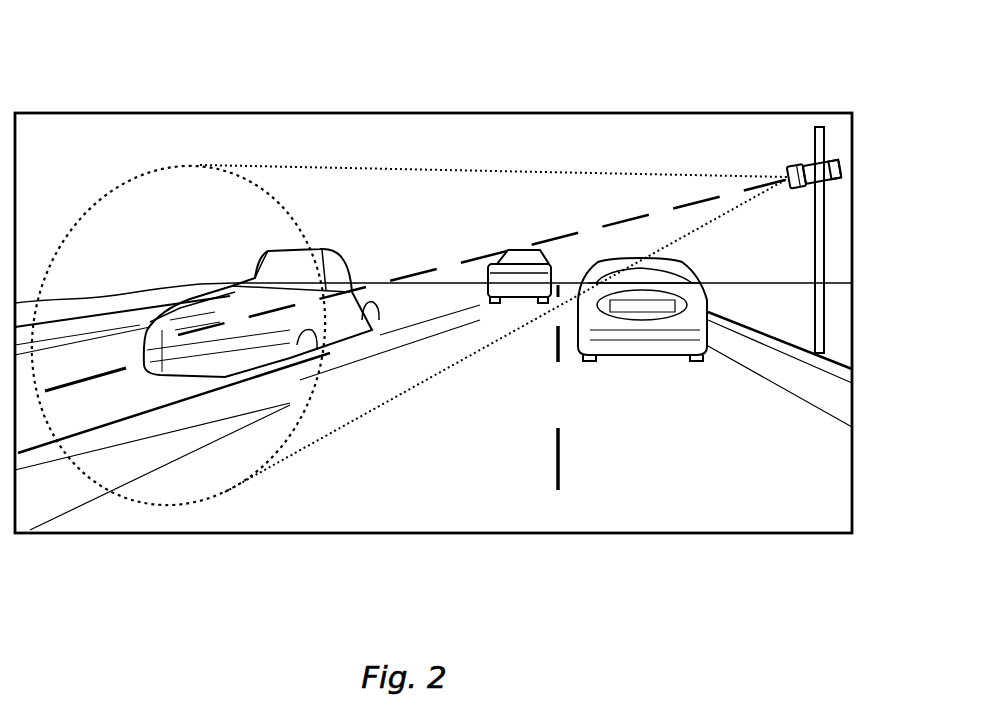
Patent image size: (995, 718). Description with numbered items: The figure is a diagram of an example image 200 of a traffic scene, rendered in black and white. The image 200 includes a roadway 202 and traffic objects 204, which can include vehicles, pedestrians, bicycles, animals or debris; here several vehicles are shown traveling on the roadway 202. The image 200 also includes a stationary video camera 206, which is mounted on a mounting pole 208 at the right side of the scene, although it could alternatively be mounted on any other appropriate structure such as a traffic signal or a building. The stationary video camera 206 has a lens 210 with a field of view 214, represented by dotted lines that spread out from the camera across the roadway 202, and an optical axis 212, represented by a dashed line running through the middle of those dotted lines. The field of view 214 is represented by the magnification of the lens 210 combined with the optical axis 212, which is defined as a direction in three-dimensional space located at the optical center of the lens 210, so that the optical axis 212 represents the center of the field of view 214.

The image 200 is at (383, 34).
The roadway 202 is at (411, 492).
The traffic objects 204 is at (622, 509).
The stationary video camera 206 is at (838, 166).
The mounting pole 208 is at (826, 233).
The lens 210 is at (792, 165).
The optical axis 212 is at (724, 192).
The field of view 214 is at (87, 478).